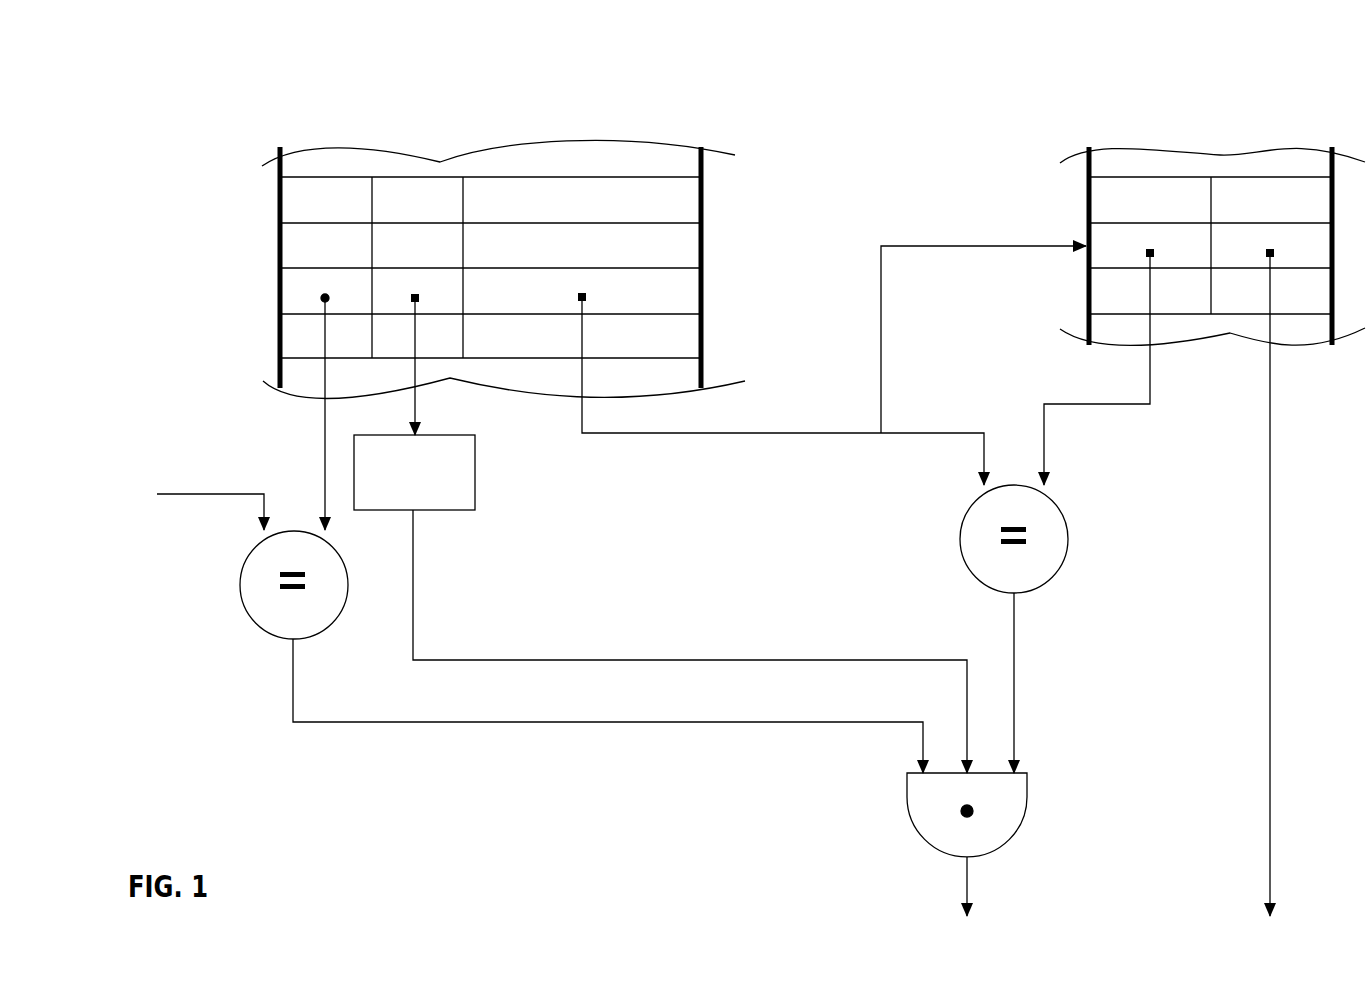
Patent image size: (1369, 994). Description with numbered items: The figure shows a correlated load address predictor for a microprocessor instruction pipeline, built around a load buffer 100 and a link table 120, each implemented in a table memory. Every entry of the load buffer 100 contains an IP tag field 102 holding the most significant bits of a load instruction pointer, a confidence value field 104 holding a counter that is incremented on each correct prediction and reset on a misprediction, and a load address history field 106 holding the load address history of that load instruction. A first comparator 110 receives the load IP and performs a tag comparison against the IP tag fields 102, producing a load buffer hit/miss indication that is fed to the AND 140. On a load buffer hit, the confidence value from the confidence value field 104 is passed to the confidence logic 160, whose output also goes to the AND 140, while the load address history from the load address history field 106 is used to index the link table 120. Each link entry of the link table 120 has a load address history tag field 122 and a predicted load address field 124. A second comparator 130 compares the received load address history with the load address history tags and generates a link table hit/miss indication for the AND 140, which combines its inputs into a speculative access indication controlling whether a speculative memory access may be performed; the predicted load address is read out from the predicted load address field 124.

The load buffer 100 is at (275, 172).
The IP tag field 102 is at (323, 177).
The confidence value field 104 is at (412, 177).
The load address history field 106 is at (578, 177).
The first comparator 110 is at (240, 583).
The link table 120 is at (1088, 172).
The load address history tag field 122 is at (1147, 177).
The predicted load address field 124 is at (1296, 177).
The second comparator 130 is at (960, 540).
The AND 140 is at (923, 810).
The confidence logic 160 is at (475, 487).